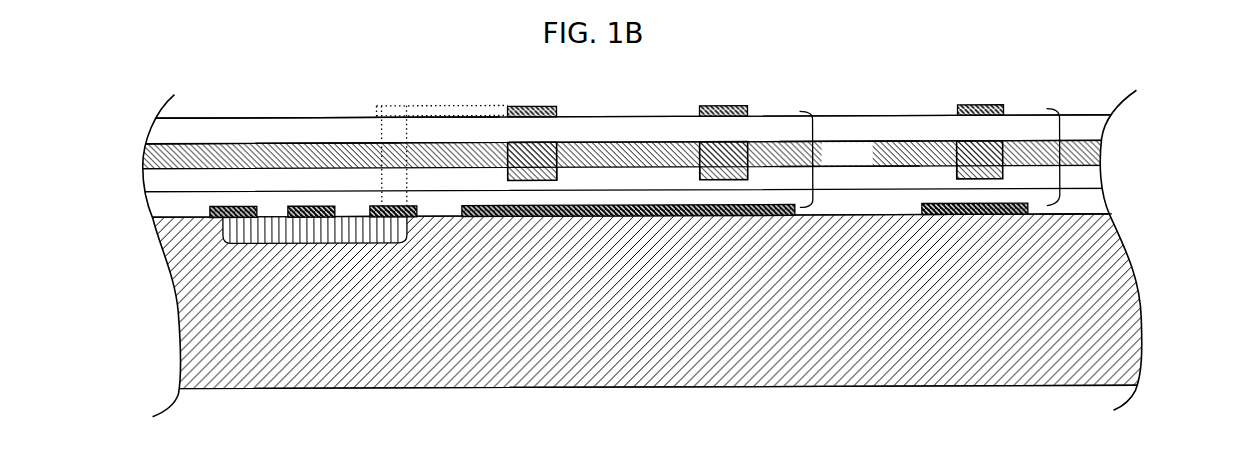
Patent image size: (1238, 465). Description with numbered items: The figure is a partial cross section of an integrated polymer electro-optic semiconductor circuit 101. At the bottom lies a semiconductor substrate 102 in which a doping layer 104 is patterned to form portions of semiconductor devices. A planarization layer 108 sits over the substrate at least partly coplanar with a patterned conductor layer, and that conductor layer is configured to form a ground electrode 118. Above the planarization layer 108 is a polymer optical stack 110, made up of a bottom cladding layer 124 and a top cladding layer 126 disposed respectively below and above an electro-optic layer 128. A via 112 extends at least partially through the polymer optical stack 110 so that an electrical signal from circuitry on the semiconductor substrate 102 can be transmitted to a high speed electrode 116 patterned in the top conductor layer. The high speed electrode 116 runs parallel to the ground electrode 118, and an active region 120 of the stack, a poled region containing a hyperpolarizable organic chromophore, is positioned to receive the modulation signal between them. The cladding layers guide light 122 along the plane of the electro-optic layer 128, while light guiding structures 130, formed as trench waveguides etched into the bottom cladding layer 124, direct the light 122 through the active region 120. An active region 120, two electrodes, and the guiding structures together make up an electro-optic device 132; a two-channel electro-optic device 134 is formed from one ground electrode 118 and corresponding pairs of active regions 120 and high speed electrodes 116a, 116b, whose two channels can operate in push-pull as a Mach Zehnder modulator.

The integrated polymer electro-optic semiconductor circuit 101 is at (340, 70).
The semiconductor substrate 102 is at (1147, 215).
The doping layer 104 is at (271, 243).
The planarization layer 108 is at (1085, 232).
The polymer optical stack 110 is at (1147, 117).
The via 112 is at (382, 135).
The high speed electrode 116 is at (975, 106).
The high speed electrode 116a is at (528, 106).
The high speed electrode 116b is at (718, 106).
The ground electrode 118 is at (515, 220).
The active region 120 is at (688, 157).
The light 122 is at (478, 123).
The bottom cladding layer 124 is at (822, 196).
The top cladding layer 126 is at (290, 117).
The electro-optic layer 128 is at (237, 142).
The light guiding structures 130 is at (557, 180).
The electro-optic device 132 is at (1068, 157).
The two-channel electro-optic device 134 is at (827, 157).